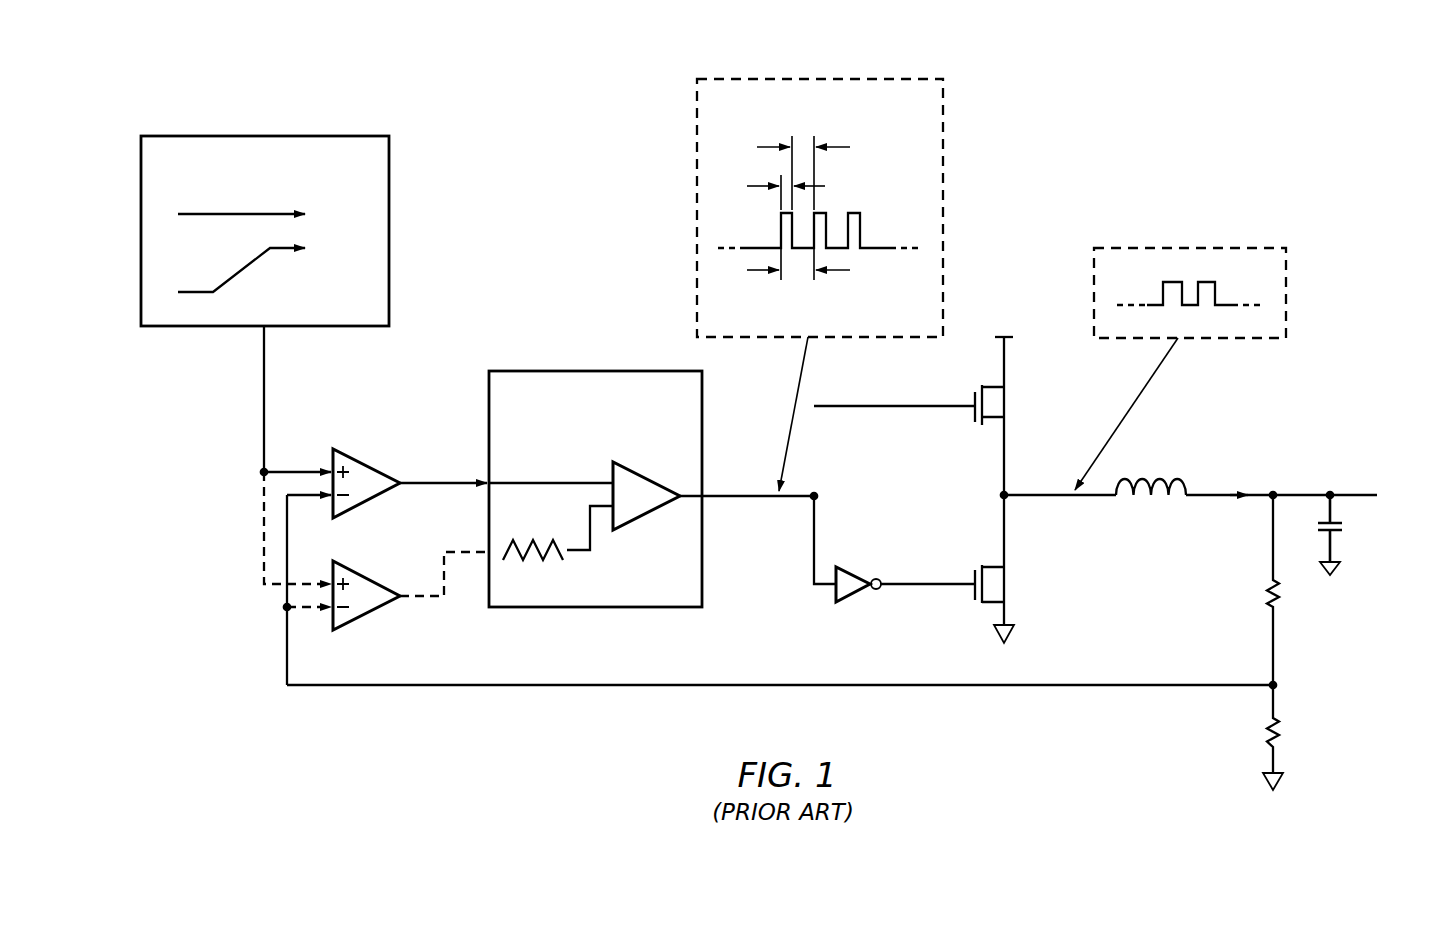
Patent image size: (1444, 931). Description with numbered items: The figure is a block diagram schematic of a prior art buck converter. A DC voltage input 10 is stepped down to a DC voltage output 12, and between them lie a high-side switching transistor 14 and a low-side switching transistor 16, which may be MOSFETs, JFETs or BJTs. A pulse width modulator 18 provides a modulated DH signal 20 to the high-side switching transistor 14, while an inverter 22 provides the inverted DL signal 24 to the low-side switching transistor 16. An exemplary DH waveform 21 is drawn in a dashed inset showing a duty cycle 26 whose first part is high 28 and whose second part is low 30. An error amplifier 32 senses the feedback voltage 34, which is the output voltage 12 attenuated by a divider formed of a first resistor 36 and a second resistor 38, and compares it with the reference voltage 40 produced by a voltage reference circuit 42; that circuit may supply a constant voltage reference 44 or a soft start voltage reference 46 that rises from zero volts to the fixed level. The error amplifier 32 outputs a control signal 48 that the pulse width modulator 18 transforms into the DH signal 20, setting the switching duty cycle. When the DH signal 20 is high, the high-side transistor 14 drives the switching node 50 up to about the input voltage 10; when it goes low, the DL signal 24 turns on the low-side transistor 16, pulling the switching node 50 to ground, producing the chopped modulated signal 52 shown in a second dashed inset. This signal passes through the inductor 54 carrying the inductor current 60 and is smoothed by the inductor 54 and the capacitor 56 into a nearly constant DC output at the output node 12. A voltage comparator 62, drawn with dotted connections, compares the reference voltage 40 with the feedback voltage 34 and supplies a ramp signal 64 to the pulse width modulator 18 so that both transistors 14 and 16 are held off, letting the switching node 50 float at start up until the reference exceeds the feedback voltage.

The DC voltage input 10 is at (1012, 338).
The DC stepped-down voltage output 12 is at (1352, 494).
The high-side switching transistor 14 is at (973, 418).
The low-side switching transistor 16 is at (973, 598).
The pulse width modulator 18 is at (578, 369).
The DH signal 20 is at (762, 498).
The exemplary DH signal 21 is at (820, 253).
The inverter 22 is at (858, 576).
The DL signal 24 is at (904, 589).
The duty cycle 26 is at (797, 270).
The high part of the duty cycle 28 is at (786, 180).
The low part of the duty cycle 30 is at (803, 145).
The error amplifier 32 is at (368, 505).
The feedback voltage 34 is at (1278, 682).
The resistor R1 36 is at (1266, 594).
The resistor R2 38 is at (1266, 728).
The reference voltage 40 is at (264, 392).
The voltage reference circuit 42 is at (265, 199).
The constant voltage reference 44 is at (228, 216).
The soft start voltage reference 46 is at (257, 262).
The control signal 48 is at (445, 488).
The switching node 50 is at (1008, 498).
The modulated signal 52 is at (1202, 245).
The inductor 54 is at (1160, 478).
The capacitor 56 is at (1345, 530).
The inductor current 60 is at (1222, 500).
The voltage comparator 62 is at (368, 617).
The ramp signal 64 is at (428, 599).